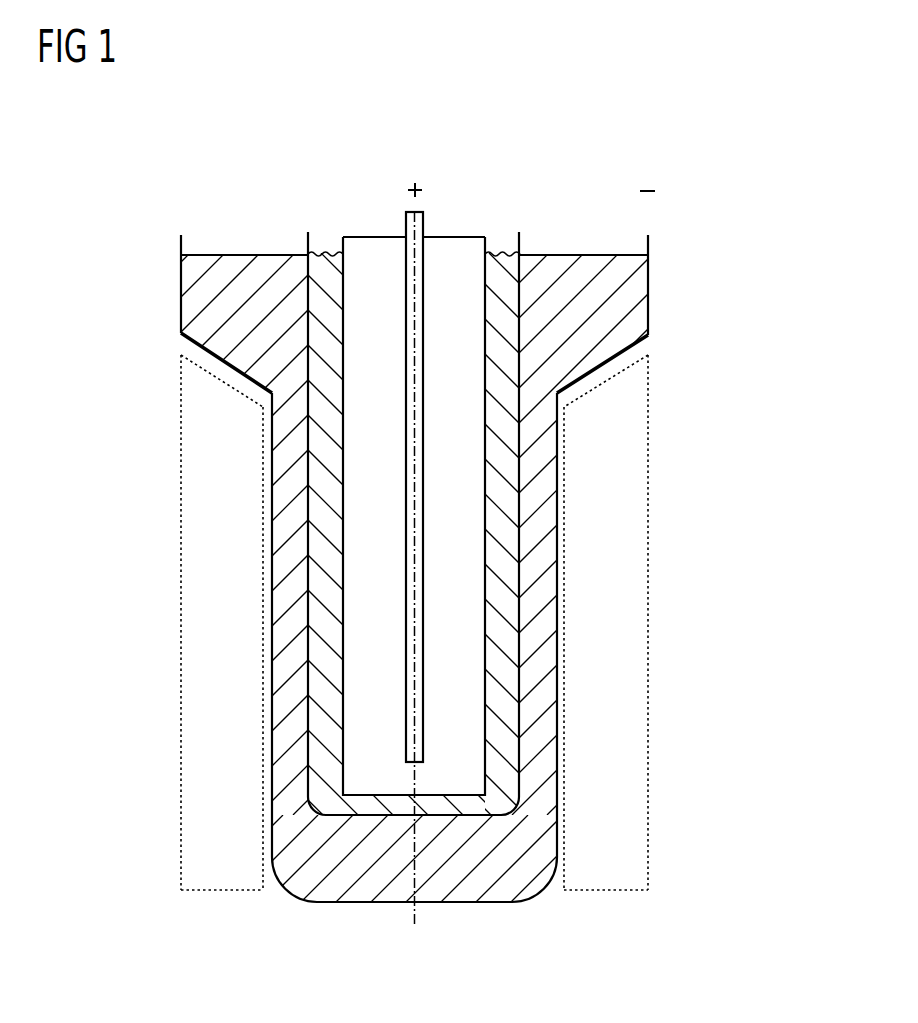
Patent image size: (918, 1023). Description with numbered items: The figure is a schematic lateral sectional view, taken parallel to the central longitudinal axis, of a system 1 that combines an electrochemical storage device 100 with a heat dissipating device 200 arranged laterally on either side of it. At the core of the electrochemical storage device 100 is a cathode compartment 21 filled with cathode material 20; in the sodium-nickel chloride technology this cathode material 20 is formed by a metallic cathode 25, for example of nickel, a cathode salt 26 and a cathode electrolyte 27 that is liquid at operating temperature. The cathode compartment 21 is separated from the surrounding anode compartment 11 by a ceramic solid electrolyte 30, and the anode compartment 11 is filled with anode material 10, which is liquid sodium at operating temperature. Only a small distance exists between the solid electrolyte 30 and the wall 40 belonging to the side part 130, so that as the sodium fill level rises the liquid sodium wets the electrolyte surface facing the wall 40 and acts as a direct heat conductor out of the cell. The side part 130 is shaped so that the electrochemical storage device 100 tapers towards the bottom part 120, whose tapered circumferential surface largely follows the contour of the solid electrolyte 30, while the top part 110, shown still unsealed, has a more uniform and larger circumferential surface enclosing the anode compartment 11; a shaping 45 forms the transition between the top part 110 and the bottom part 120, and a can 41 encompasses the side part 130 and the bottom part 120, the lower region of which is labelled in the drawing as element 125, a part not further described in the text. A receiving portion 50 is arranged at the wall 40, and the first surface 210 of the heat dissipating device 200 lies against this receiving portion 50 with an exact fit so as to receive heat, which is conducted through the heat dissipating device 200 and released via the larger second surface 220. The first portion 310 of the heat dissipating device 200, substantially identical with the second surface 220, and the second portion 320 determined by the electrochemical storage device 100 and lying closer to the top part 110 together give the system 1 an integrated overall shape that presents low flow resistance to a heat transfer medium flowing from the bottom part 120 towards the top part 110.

The system 1 is at (757, 174).
The anode material 10 is at (243, 369).
The anode compartment 11 is at (264, 330).
The cathode material 20 is at (407, 218).
The cathode compartment 21 is at (462, 358).
The metallic cathode 25 is at (414, 472).
The cathode salt 26 is at (452, 246).
The cathode electrolyte 27 is at (503, 256).
The solid electrolyte 30 is at (521, 237).
The wall 40 is at (558, 474).
The can 41 is at (541, 897).
The shaping 45 is at (186, 342).
The receiving portion 50 is at (272, 551).
The electrochemical storage device 100 is at (660, 265).
The top part 110 is at (160, 220).
The bottom part 120 is at (205, 955).
The base 125 is at (462, 882).
The side part 130 is at (572, 605).
The heat dissipating device 200 is at (195, 748).
The first surface 210 is at (264, 805).
The second surface 220 is at (181, 805).
The first portion 310 is at (181, 667).
The second portion 320 is at (181, 301).